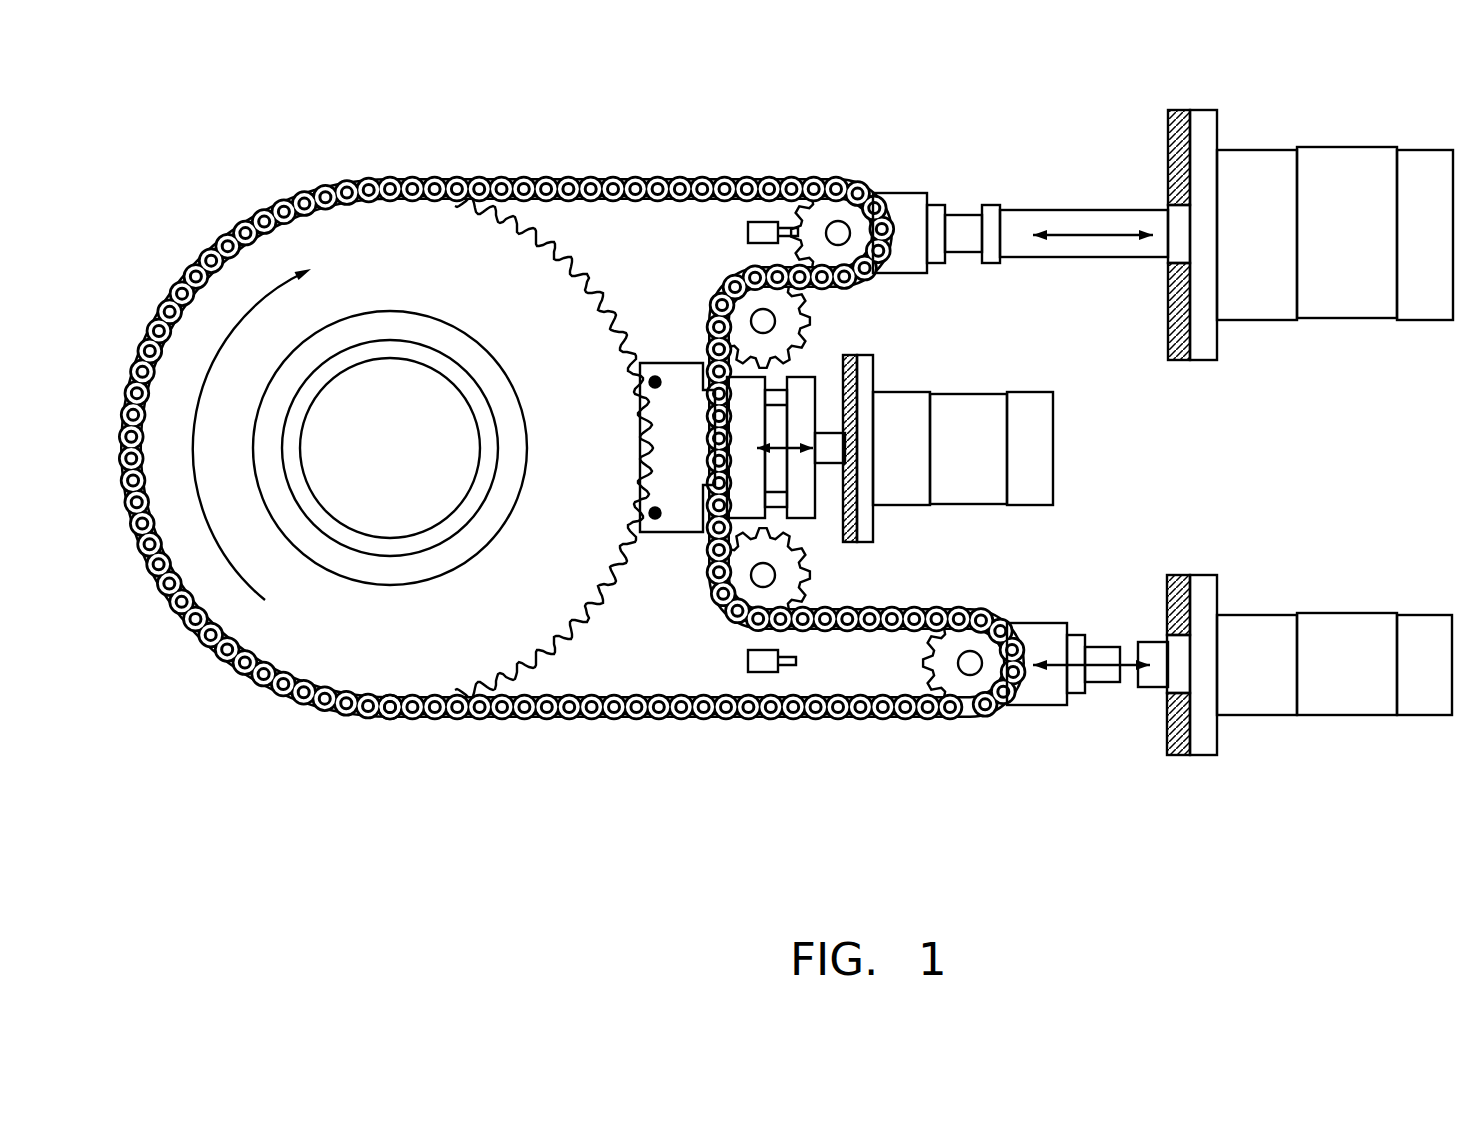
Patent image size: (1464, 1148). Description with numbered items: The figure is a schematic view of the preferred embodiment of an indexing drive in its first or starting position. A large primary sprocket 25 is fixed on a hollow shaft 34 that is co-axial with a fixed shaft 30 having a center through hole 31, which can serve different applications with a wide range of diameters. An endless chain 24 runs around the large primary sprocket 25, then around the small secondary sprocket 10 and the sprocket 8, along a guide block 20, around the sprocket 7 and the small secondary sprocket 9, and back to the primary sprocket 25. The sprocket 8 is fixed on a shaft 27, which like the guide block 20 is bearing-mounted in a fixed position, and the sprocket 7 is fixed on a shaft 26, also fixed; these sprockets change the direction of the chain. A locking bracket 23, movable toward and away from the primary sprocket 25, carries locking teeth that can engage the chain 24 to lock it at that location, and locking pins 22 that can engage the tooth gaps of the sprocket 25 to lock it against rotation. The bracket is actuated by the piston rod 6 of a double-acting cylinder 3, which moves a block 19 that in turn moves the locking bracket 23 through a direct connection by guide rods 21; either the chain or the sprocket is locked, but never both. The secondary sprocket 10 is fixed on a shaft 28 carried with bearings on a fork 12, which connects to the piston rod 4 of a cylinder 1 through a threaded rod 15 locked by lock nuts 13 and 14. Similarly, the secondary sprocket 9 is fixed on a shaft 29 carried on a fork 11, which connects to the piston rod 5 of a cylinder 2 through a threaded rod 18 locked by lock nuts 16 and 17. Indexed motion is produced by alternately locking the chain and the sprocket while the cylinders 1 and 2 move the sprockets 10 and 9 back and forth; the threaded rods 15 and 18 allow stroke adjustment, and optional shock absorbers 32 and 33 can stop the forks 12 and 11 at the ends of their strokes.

The cylinder 1 is at (1248, 175).
The cylinder 2 is at (1338, 690).
The double-acting cylinder 3 is at (1033, 413).
The piston rod 4 is at (1155, 218).
The piston rod 5 is at (1172, 660).
The piston rod 6 is at (827, 451).
The sprocket 7 is at (792, 588).
The sprocket 8 is at (740, 385).
The small secondary sprocket 9 is at (962, 687).
The small secondary sprocket 10 is at (828, 203).
The fork 11 is at (1028, 680).
The fork 12 is at (893, 217).
The lock nut 13 is at (934, 217).
The lock nut 14 is at (990, 218).
The threaded rod 15 is at (963, 223).
The lock nut 16 is at (1077, 672).
The lock nut 17 is at (1130, 680).
The threaded rod 18 is at (1100, 677).
The block 19 is at (803, 412).
The guide block 20 is at (775, 497).
The guide rods 21 is at (690, 363).
The locking pins 22 is at (655, 382).
The locking bracket 23 is at (668, 420).
The endless chain 24 is at (640, 535).
The large primary sprocket 25 is at (437, 648).
The shaft 26 is at (762, 577).
The shaft 27 is at (763, 321).
The shaft 28 is at (838, 233).
The shaft 29 is at (973, 667).
The fixed shaft 30 is at (372, 352).
The center through hole 31 is at (365, 492).
The shock absorber 32 is at (777, 227).
The shock absorber 33 is at (770, 665).
The hollow shaft 34 is at (443, 335).